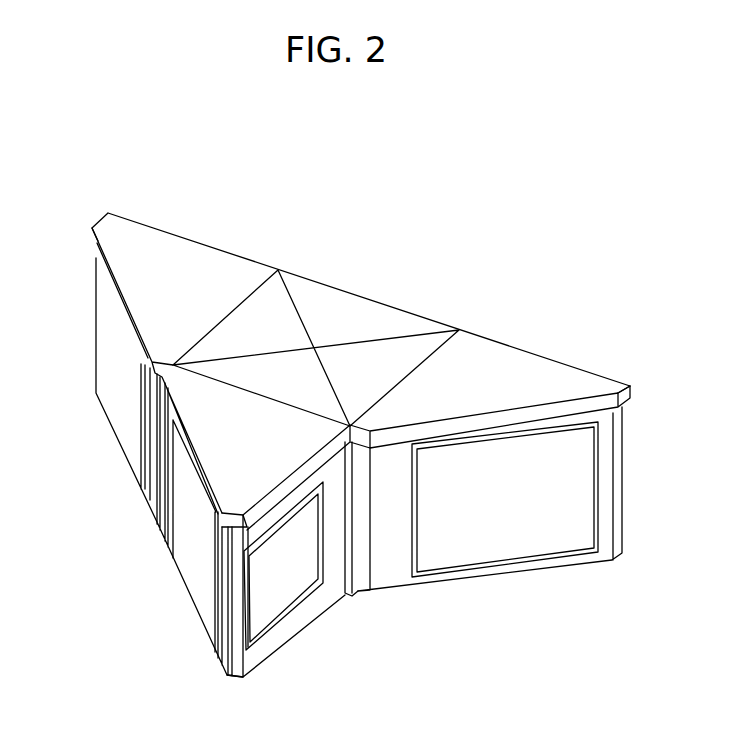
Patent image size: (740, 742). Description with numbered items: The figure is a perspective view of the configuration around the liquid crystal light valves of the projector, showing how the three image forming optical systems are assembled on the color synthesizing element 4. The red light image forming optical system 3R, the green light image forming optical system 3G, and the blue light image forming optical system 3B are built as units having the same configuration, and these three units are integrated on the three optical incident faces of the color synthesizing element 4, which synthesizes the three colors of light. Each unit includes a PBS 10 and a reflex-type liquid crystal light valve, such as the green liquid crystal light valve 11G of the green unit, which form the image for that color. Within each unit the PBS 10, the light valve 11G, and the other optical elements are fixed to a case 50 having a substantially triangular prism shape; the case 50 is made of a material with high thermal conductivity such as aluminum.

The color synthesizing element 4 is at (352, 312).
The blue light image forming optical system 3B is at (166, 215).
The green light image forming optical system 3G is at (184, 637).
The red light image forming optical system 3R is at (553, 342).
The PBS 10 is at (125, 400).
The green liquid crystal light valve 11G is at (285, 593).
The case 50 is at (97, 250).